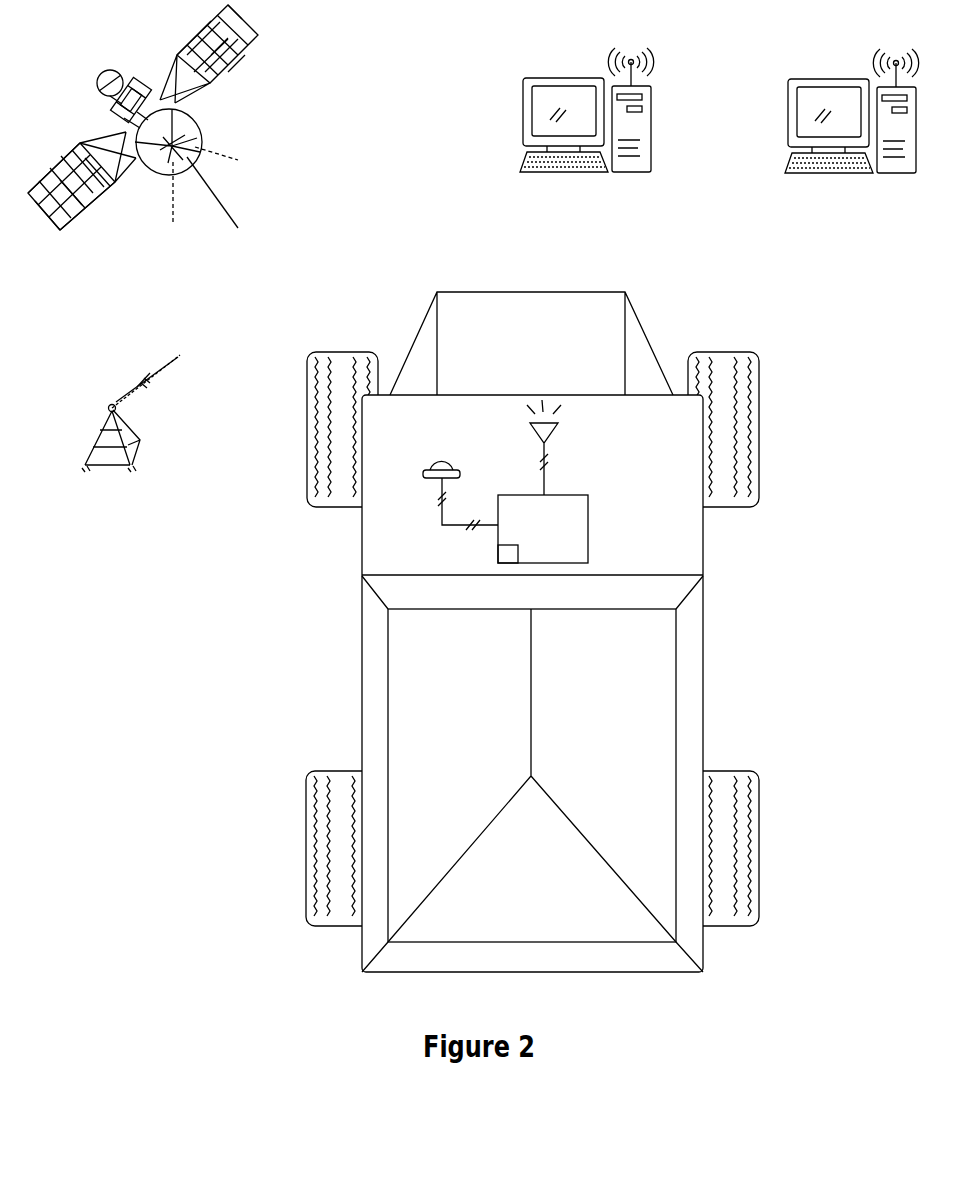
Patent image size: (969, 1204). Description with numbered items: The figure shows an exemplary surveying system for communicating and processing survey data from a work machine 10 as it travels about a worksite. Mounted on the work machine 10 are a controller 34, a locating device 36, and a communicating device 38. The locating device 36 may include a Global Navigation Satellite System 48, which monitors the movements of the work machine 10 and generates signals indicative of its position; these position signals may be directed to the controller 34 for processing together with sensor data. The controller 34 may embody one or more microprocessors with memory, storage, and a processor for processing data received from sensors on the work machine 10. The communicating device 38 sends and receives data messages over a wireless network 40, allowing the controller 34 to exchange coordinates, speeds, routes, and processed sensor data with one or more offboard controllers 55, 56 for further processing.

The work machine 10 is at (717, 320).
The controller 34 is at (556, 538).
The locating device 36 is at (433, 459).
The communicating device 38 is at (531, 434).
The wireless network 40 is at (104, 410).
The Global Navigation Satellite System 48 is at (255, 113).
The offboard controller 55 is at (530, 75).
The offboard controller 56 is at (807, 75).